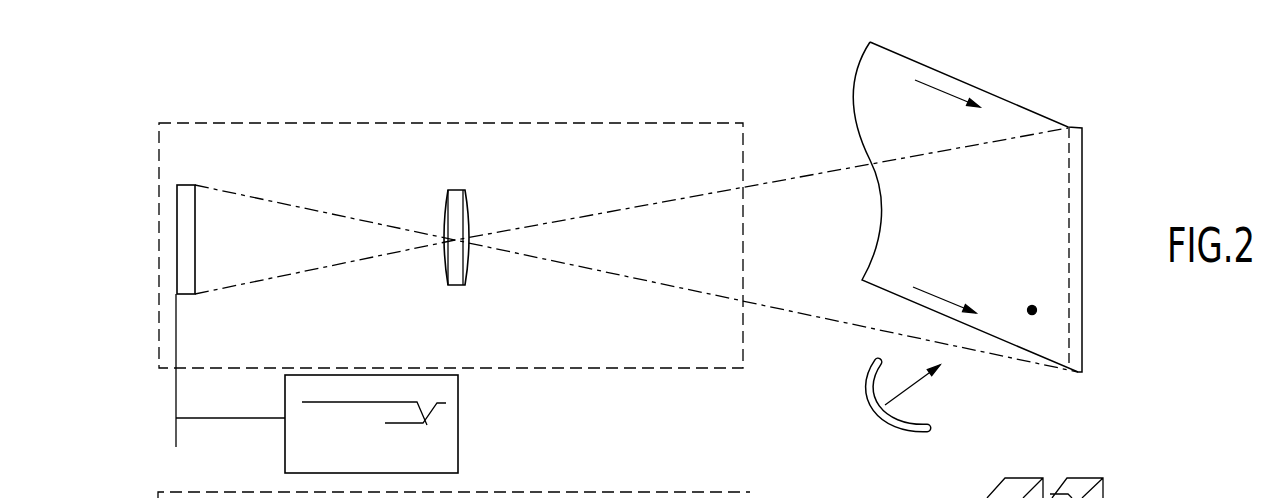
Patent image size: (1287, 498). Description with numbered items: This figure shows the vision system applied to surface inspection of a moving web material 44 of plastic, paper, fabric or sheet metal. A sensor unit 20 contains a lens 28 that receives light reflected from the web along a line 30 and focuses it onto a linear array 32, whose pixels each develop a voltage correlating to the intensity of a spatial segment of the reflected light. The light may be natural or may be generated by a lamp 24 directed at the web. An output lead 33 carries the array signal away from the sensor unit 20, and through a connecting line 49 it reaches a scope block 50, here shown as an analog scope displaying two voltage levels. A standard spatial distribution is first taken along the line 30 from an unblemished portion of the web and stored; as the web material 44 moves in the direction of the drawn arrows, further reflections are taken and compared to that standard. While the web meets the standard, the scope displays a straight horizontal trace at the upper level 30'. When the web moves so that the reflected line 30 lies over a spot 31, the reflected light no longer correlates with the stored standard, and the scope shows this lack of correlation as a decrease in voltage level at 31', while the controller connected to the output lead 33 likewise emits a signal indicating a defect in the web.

The sensor unit 20 is at (194, 152).
The linear array 32 is at (183, 186).
The lens 28 is at (455, 189).
The web material 44 is at (949, 220).
The line 30 is at (1110, 248).
The spot 31 is at (1081, 290).
The lamp 24 is at (884, 427).
The output lead 33 is at (176, 385).
The drive signal line 49 is at (233, 419).
The driver circuit 50 is at (411, 397).
The high voltage level signal 30' is at (377, 373).
The decrease in voltage levels 31' is at (405, 432).